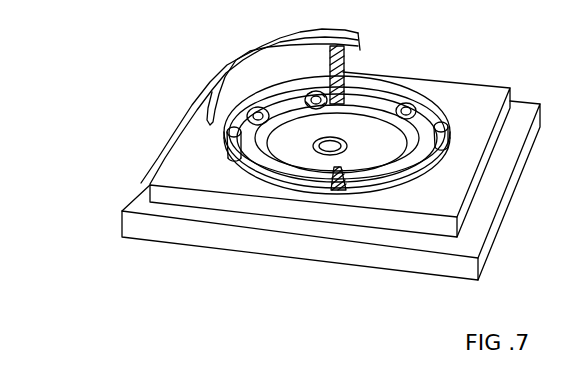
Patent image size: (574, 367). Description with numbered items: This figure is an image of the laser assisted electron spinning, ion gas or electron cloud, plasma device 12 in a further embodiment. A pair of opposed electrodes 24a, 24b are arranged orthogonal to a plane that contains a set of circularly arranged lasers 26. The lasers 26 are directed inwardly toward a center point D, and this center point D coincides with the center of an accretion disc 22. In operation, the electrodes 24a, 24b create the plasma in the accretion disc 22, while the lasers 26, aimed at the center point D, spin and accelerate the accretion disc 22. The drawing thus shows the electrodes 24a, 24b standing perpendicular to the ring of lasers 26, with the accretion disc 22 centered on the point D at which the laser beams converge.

The sensor mounting assembly 12 is at (491, 46).
The accretion disc 22 is at (232, 129).
The electrode 24a is at (342, 70).
The electrode 24b is at (330, 171).
The lasers 26 is at (226, 137).
The center point D is at (257, 190).